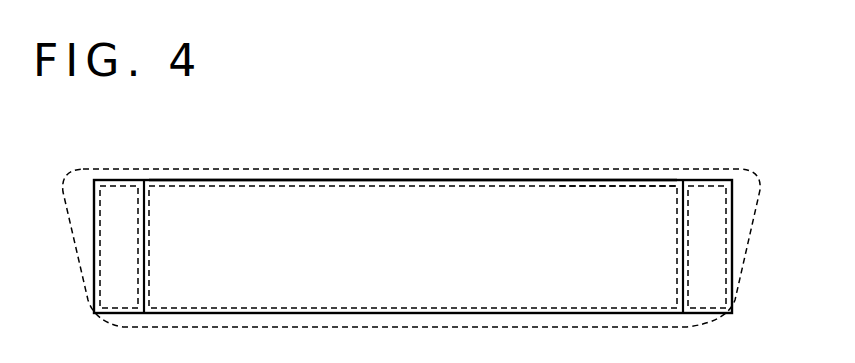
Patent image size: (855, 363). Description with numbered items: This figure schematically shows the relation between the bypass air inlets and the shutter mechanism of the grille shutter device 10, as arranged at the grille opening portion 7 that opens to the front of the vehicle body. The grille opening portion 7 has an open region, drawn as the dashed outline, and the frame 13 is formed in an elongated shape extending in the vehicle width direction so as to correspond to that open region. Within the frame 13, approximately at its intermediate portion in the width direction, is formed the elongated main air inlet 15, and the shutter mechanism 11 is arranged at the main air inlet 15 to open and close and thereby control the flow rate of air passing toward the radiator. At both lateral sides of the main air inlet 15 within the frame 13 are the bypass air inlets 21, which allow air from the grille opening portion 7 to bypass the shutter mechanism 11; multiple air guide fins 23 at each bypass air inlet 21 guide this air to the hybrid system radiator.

The grille opening portion 7 is at (450, 169).
The grille shutter device 10 is at (227, 181).
The shutter mechanism 11 is at (370, 186).
The frame 13 is at (287, 180).
The main air inlet 15 is at (582, 188).
The bypass air inlet 21 is at (98, 237).
The air guide fin 23 is at (120, 185).